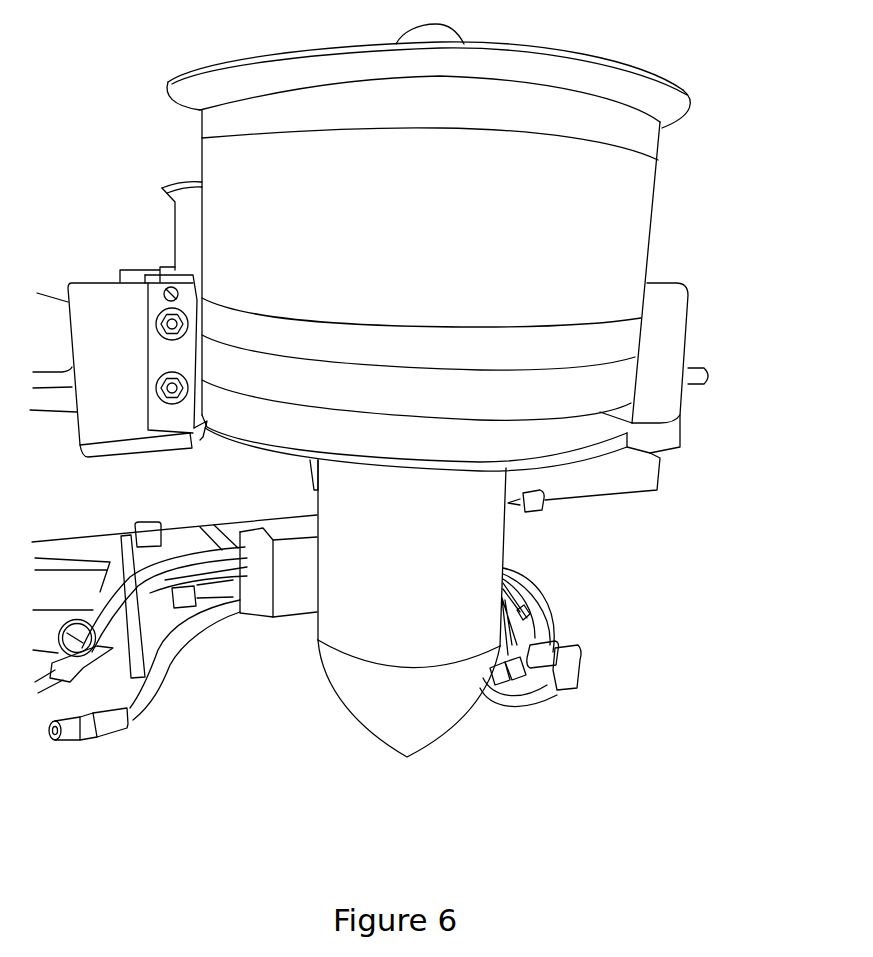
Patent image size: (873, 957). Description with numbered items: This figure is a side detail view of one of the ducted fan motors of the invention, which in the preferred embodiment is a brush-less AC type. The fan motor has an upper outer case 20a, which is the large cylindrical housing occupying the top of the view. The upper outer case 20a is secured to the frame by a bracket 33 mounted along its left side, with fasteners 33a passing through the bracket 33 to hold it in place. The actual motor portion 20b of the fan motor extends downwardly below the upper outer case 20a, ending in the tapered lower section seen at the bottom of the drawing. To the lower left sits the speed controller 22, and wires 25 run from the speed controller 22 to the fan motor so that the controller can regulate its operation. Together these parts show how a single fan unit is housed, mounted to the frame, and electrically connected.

The upper outer case 20a is at (580, 285).
The motor portion 20b is at (395, 733).
The speed controller 22 is at (297, 593).
The wires 25 is at (552, 623).
The bracket 33 is at (107, 393).
The fasteners 33a is at (163, 380).